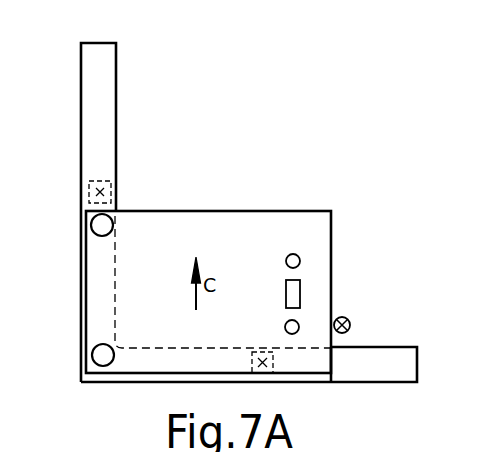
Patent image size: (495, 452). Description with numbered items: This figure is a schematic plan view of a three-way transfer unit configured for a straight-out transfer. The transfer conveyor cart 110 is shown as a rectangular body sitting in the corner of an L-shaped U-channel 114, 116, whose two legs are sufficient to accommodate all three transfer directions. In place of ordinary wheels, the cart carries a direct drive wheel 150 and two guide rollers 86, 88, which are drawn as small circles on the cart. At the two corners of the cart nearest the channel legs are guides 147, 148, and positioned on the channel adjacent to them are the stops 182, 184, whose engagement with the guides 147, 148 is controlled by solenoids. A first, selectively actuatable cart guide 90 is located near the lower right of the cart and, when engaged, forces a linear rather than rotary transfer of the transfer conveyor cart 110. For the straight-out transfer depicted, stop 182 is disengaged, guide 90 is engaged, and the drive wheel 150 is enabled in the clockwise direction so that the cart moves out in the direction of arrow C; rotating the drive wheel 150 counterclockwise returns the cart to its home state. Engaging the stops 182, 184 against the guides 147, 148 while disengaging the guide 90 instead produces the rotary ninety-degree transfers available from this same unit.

The transfer conveyor cart 110 is at (269, 210).
The U-channel 114 is at (88, 85).
The U-channel 116 is at (419, 367).
The guide 147 is at (113, 226).
The guide 148 is at (105, 354).
The direct drive wheel 150 is at (300, 290).
The stop 182 is at (89, 196).
The stop 184 is at (262, 374).
The guide roller 86 is at (299, 258).
The guide roller 88 is at (286, 323).
The cart guide 90 is at (349, 320).